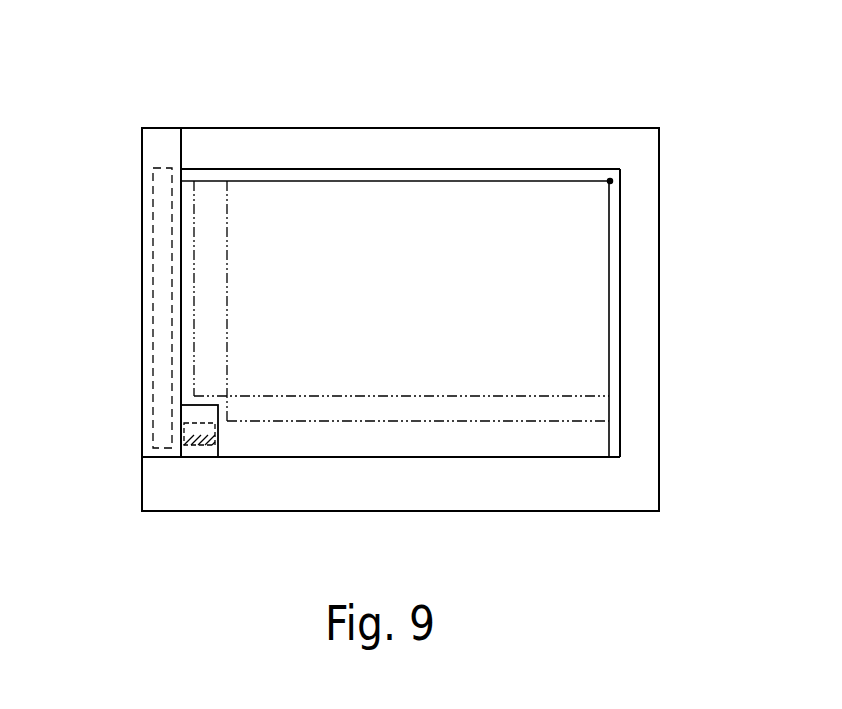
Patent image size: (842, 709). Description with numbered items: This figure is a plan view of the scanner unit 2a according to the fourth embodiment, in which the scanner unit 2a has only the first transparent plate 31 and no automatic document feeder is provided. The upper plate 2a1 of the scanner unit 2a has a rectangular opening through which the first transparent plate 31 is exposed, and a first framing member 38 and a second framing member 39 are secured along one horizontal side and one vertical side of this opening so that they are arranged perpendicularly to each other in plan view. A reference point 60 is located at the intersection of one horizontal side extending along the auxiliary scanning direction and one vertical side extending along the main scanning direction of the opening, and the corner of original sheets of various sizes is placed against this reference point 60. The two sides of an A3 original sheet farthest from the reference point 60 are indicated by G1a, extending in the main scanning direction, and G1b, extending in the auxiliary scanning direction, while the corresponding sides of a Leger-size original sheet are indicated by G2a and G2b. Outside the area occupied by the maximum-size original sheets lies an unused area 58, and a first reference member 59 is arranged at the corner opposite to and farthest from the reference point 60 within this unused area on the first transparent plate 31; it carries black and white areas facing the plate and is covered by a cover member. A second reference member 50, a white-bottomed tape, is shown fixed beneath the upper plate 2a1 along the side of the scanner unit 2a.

The scanner unit 2a is at (586, 128).
The upper plate 2a1 is at (492, 158).
The first framing member 38 is at (372, 177).
The unused area 58 is at (190, 220).
The second reference member 50 is at (165, 396).
The second framing member 39 is at (613, 343).
The first transparent plate 31 is at (583, 287).
The reference point 60 is at (611, 180).
The first reference member 59 is at (197, 448).
The side of A3 original sheet extending in the main scanning direction G1a is at (227, 249).
The side of Leger-size original sheet extending in the main scanning direction G2a is at (194, 320).
The side of A3 original sheet extending in the auxiliary scanning direction G1b is at (387, 423).
The side of Leger-size original sheet extending in the auxiliary scanning direction G2b is at (470, 398).